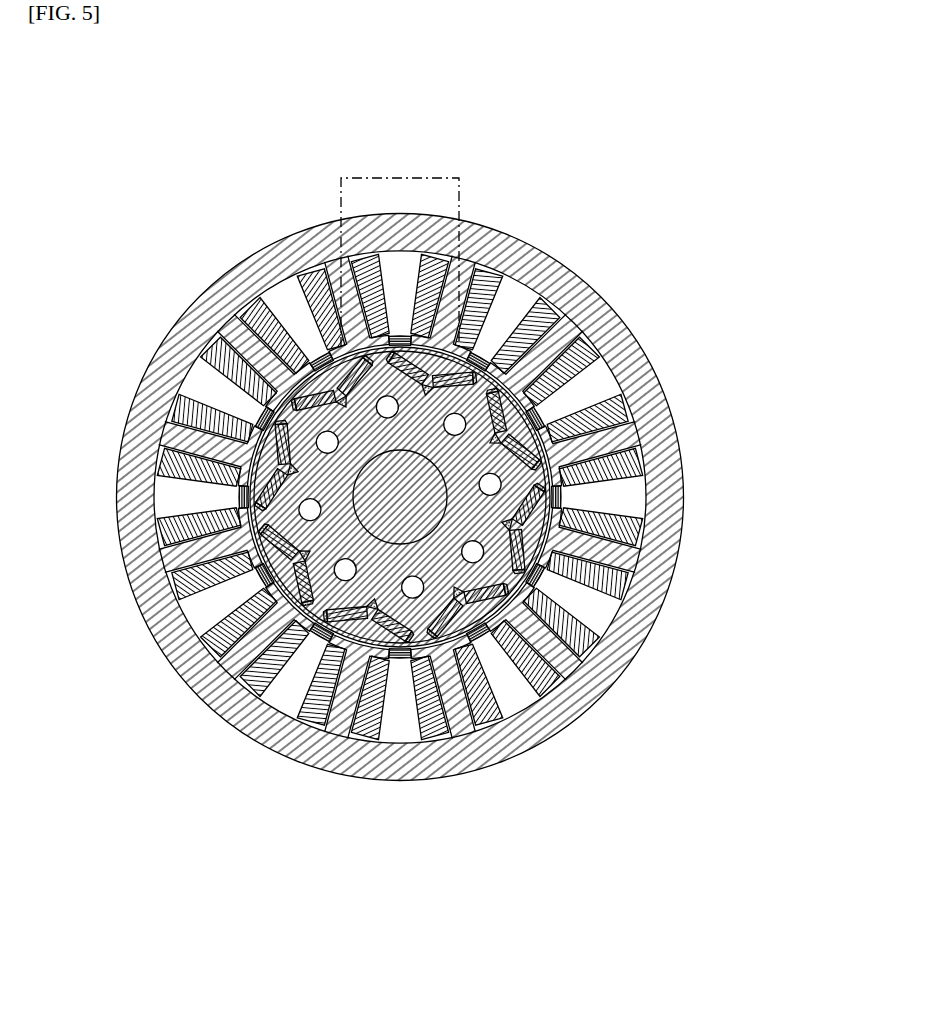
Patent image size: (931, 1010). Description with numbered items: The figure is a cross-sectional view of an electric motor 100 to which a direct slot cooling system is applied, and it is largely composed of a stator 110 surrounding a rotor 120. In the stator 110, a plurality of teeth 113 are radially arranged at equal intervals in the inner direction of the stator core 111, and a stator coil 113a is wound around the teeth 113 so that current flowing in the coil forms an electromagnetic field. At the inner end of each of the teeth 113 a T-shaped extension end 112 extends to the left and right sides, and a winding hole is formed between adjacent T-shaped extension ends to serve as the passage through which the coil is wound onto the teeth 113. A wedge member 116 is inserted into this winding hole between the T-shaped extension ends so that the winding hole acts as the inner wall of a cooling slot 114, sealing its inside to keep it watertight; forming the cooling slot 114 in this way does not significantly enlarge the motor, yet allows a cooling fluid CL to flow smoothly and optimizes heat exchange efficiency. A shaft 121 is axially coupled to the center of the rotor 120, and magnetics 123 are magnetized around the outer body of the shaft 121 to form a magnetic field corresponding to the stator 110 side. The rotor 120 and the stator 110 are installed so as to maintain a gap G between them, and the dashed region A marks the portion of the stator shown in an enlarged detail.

The motor 100 is at (105, 93).
The stator 110 is at (614, 296).
The stator core 111 is at (170, 356).
The T-shaped extension end 112 is at (243, 495).
The teeth 113 is at (190, 440).
The stator coil 113a is at (243, 307).
The cooling slot 114 is at (285, 304).
The wedge member 116 is at (555, 493).
The rotor 120 is at (480, 522).
The shaft 121 is at (383, 524).
The magnetics 123 is at (497, 614).
The cooling fluid CL is at (590, 390).
The gap G is at (477, 630).
The detail region A is at (401, 176).